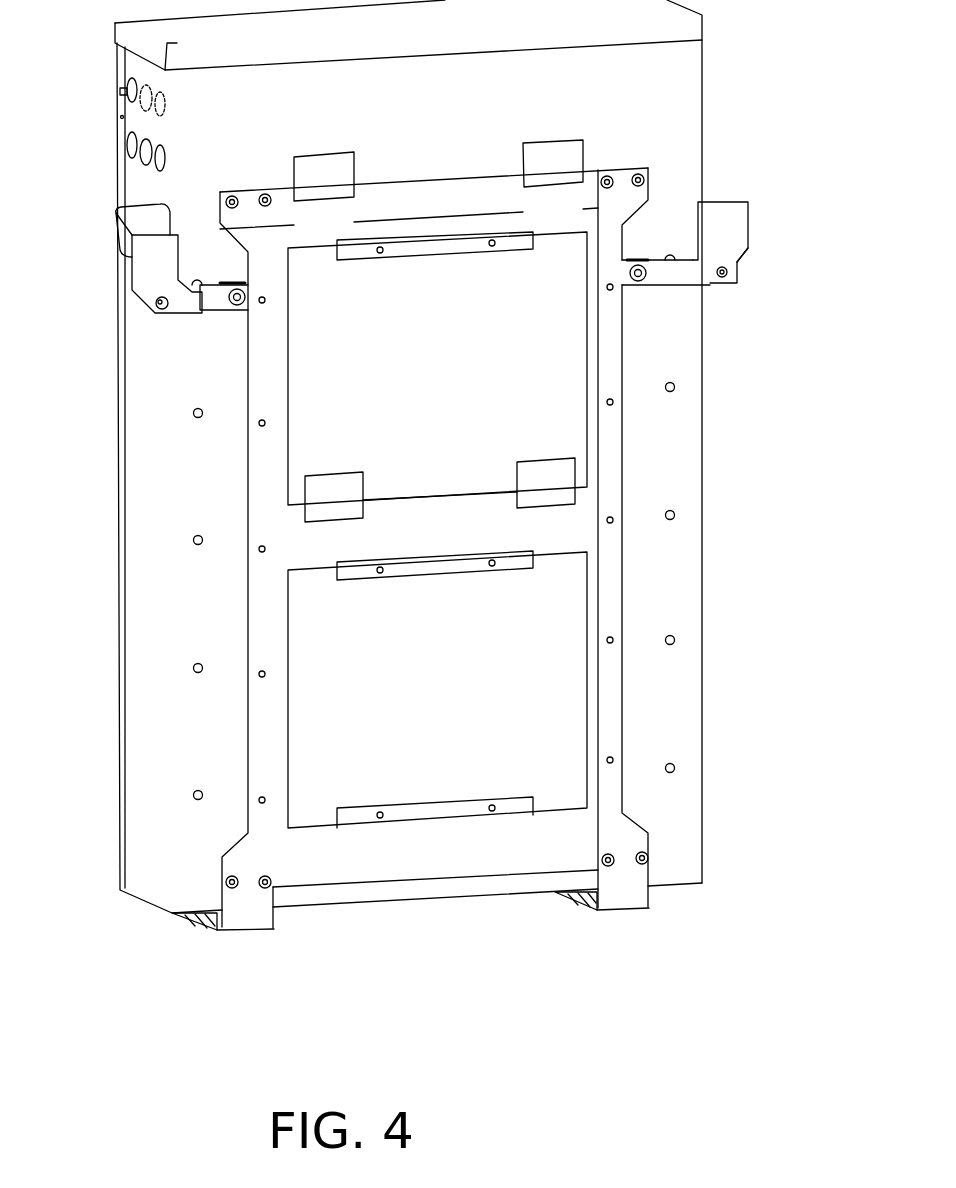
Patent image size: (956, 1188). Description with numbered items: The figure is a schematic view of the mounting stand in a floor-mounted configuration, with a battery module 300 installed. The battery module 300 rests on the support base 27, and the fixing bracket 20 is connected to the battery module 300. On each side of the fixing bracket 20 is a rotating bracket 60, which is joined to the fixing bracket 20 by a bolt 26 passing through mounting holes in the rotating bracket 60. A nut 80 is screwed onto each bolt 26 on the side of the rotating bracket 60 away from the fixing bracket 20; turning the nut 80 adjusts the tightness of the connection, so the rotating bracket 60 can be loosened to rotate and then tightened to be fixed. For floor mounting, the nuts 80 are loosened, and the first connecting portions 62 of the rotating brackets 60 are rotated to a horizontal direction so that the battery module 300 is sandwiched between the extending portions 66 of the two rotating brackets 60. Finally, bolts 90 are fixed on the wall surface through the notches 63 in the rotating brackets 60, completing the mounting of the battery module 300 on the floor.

The battery module 300 is at (650, 108).
The fixing bracket 20 is at (265, 720).
The bolt 26 is at (236, 306).
The support base 27 is at (212, 929).
The rotating bracket 60 is at (150, 275).
The first connecting portion 62 is at (660, 273).
The notch 63 is at (728, 262).
The extending portion 66 is at (733, 217).
The nut 80 is at (231, 307).
The bolt 90 is at (727, 274).